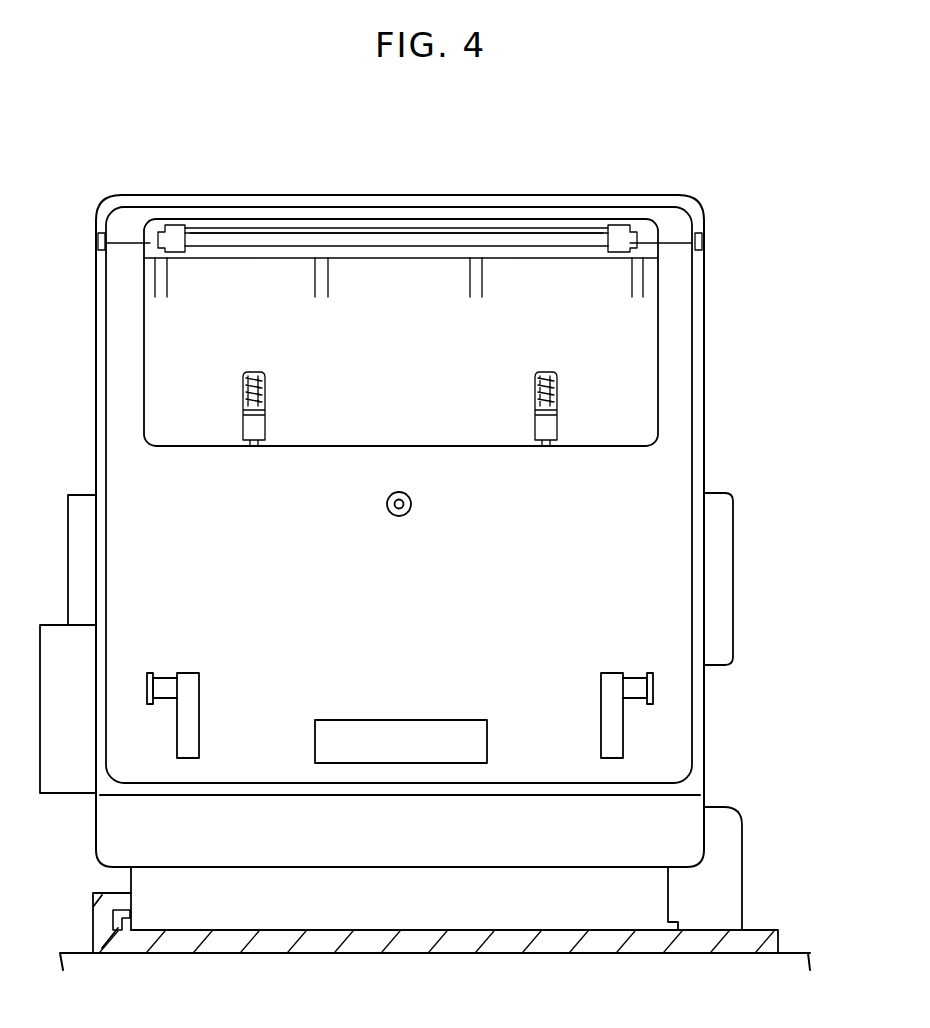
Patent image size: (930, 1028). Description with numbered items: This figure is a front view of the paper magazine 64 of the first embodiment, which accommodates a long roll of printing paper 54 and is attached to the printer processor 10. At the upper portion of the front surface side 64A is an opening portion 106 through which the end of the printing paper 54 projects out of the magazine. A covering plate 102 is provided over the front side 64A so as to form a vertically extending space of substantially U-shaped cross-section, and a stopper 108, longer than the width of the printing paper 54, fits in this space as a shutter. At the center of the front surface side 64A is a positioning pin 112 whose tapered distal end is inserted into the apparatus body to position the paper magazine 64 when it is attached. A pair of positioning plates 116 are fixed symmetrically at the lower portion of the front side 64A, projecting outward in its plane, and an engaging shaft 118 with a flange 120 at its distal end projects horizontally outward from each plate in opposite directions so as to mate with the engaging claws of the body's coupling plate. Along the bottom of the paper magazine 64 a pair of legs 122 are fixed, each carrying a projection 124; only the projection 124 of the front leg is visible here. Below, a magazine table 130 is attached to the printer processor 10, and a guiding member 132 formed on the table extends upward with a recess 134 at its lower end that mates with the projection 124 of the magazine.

The printer processor 10 is at (447, 1002).
The printing paper 54 is at (470, 228).
The paper magazine 64 is at (650, 177).
The front surface side 64A is at (668, 476).
The covering plate 102 is at (640, 360).
The opening portion 106 is at (262, 228).
The stopper 108 is at (385, 240).
The positioning pin 112 is at (412, 506).
The positioning plates 116 is at (199, 743).
The engaging shaft 118 is at (170, 680).
The flange 120 is at (150, 671).
The legs 122 is at (650, 893).
The projection 124 is at (112, 921).
The magazine table 130 is at (505, 930).
The guiding member 132 is at (98, 893).
The recess 134 is at (130, 915).